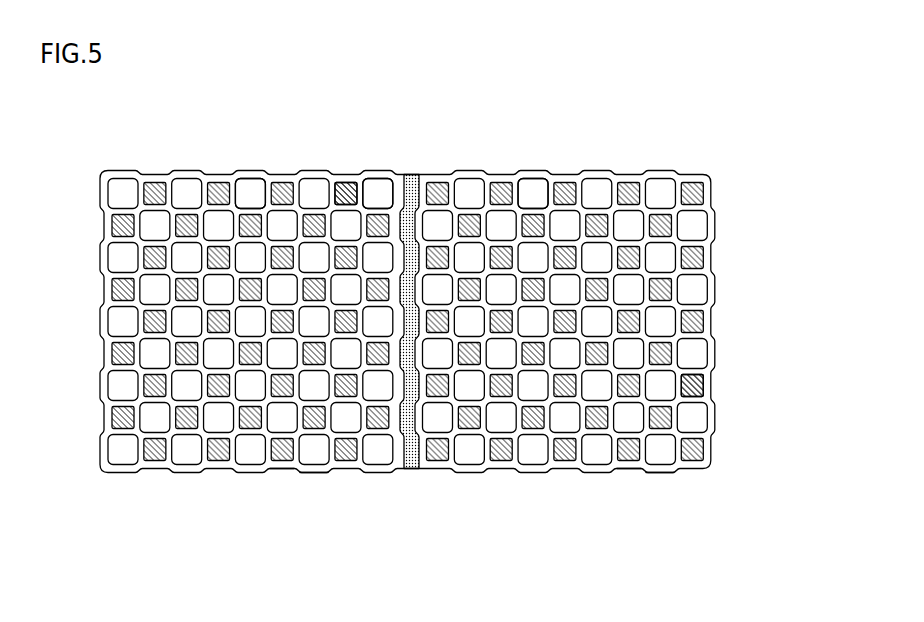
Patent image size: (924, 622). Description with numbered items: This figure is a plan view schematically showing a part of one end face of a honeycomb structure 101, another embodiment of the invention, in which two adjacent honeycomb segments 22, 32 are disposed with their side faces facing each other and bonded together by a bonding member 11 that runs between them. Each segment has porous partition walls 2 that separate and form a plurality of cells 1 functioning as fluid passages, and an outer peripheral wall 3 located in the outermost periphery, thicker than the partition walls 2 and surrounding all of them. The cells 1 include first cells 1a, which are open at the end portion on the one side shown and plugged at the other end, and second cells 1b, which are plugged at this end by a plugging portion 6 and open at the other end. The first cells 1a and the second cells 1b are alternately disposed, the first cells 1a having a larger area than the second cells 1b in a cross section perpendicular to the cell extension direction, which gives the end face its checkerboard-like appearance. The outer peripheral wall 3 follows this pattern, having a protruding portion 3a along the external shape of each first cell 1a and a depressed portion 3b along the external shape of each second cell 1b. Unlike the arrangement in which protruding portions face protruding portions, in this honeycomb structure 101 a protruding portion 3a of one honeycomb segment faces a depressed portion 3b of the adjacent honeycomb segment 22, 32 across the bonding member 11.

The cell 1 is at (532, 195).
The first cell 1a is at (377, 195).
The second cell 1b is at (345, 195).
The partition wall 2 is at (263, 197).
The outer peripheral wall 3 is at (456, 172).
The protruding portion 3a is at (317, 475).
The depressed portion 3b is at (280, 475).
The plugging portion 6 is at (703, 387).
The bonding member 11 is at (410, 470).
The honeycomb segment 22 is at (167, 487).
The honeycomb segment 32 is at (548, 488).
The honeycomb structure 101 is at (818, 146).